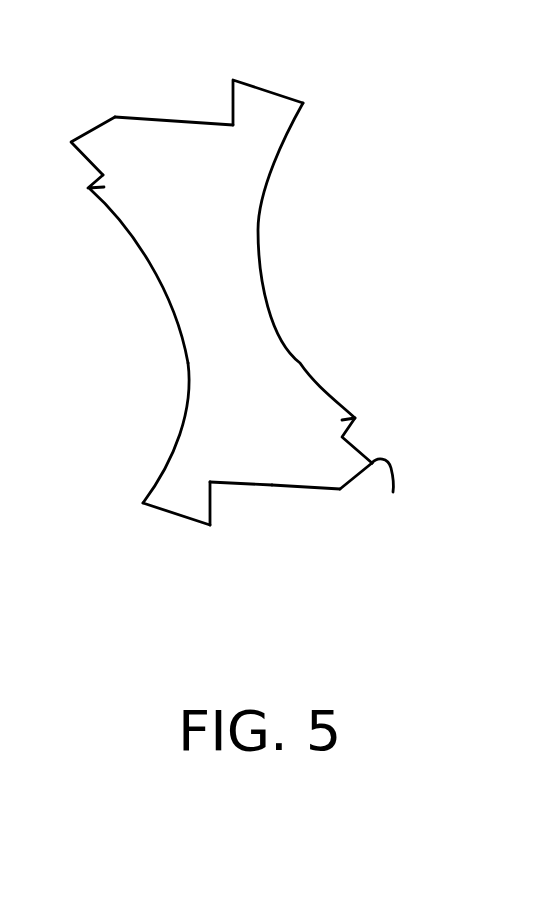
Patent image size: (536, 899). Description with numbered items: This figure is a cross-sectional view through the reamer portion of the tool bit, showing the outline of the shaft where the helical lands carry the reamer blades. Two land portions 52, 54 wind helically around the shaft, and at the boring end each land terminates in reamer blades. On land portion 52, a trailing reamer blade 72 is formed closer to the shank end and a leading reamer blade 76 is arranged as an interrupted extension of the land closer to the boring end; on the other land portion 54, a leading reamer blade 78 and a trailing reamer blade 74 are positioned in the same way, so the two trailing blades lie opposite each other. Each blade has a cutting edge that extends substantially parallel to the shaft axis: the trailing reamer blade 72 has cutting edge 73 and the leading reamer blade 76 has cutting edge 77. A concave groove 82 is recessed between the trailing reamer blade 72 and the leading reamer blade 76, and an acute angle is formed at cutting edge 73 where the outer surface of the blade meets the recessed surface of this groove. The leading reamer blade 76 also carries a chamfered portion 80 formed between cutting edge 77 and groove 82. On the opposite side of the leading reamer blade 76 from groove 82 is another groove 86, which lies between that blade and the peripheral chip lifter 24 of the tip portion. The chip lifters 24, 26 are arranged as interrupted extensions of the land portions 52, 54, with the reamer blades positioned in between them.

The chip lifter 24 is at (358, 412).
The chip lifter 26 is at (97, 195).
The land portion 52 is at (262, 470).
The land portion 54 is at (182, 140).
The trailing reamer blade 72 is at (200, 511).
The cutting edge 73 is at (210, 528).
The trailing reamer blade 74 is at (273, 105).
The leading reamer blade 76 is at (353, 473).
The cutting edge 77 is at (394, 491).
The leading reamer blade 78 is at (81, 141).
The chamfered portion 80 is at (347, 490).
The concave groove 82 is at (229, 511).
The groove 86 is at (370, 433).